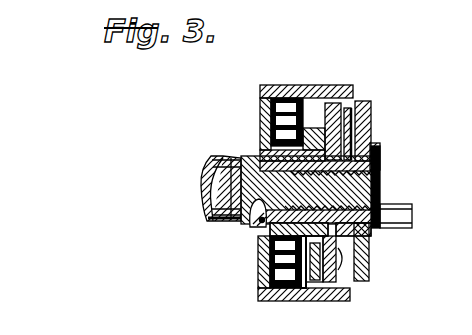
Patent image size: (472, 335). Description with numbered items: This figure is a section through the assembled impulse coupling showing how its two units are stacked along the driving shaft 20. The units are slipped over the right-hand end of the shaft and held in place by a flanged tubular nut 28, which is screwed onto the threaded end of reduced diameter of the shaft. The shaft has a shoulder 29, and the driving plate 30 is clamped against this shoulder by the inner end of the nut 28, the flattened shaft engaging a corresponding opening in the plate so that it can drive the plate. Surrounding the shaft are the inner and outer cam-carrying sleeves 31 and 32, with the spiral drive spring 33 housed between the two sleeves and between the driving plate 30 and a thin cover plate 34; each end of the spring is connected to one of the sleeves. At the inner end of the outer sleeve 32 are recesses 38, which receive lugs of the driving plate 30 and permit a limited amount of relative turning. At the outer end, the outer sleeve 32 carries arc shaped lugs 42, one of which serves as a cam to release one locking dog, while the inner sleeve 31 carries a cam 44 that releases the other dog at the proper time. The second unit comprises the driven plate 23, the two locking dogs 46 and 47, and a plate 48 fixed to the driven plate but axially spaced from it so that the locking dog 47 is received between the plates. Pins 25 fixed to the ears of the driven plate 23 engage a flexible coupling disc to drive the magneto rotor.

The driving shaft 20 is at (194, 173).
The driven plate 23 is at (360, 268).
The pin 25 is at (396, 211).
The flanged tubular nut 28 is at (352, 161).
The shoulder 29 is at (241, 219).
The driving plate 30 is at (251, 282).
The inner cam-carrying sleeve 31 is at (250, 248).
The outer cam-carrying sleeve 32 is at (285, 69).
The spiral drive spring 33 is at (262, 110).
The cover plate 34 is at (307, 116).
The recess 38 is at (262, 79).
The arc shaped lug 42 is at (345, 79).
The cam 44 is at (339, 99).
The locking dog 46 is at (296, 292).
The locking dog 47 is at (363, 88).
The plate 48 is at (310, 293).